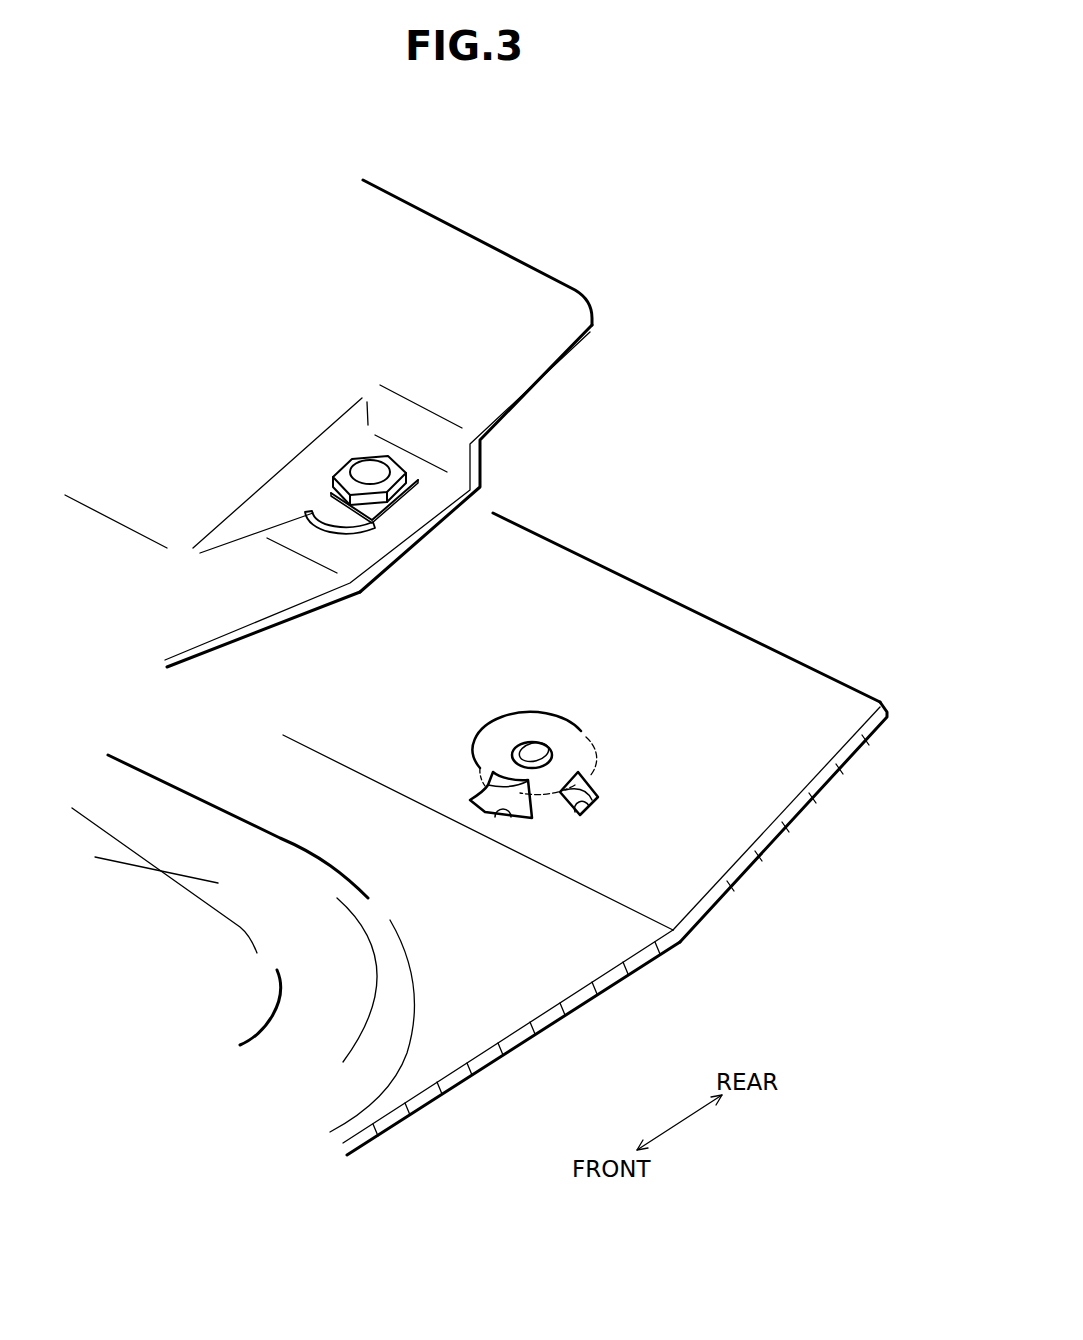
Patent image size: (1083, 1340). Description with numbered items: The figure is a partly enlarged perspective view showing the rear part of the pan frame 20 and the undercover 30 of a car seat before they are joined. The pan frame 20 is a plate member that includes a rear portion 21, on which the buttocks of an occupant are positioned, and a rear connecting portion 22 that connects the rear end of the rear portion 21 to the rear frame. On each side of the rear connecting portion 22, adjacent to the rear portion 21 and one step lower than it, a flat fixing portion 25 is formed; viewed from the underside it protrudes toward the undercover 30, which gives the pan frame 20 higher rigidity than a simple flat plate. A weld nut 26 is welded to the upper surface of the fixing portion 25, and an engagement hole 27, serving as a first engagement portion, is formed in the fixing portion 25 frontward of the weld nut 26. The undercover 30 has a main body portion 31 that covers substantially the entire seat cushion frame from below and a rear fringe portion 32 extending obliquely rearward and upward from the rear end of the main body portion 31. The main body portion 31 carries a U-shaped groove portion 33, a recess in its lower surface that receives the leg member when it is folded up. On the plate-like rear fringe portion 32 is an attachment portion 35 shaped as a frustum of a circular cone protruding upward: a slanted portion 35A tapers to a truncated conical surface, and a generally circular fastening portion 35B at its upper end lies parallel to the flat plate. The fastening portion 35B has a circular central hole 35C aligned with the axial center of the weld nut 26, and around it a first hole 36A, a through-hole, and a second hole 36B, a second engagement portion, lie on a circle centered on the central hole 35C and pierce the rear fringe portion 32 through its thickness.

The pan frame 20 is at (328, 407).
The rear portion 21 is at (187, 613).
The rear connecting portion 22 is at (503, 268).
The fixing portion 25 is at (405, 522).
The weld nut 26 is at (362, 452).
The engagement hole 27 is at (313, 510).
The undercover 30 is at (479, 834).
The main body portion 31 is at (537, 970).
The rear fringe portion 32 is at (723, 668).
The groove portion 33 is at (345, 987).
The attachment portion 35 is at (576, 765).
The slanted portion 35A is at (590, 752).
The fastening portion 35B is at (538, 728).
The central hole 35C is at (525, 750).
The first hole 36A is at (500, 820).
The second hole 36B is at (583, 812).